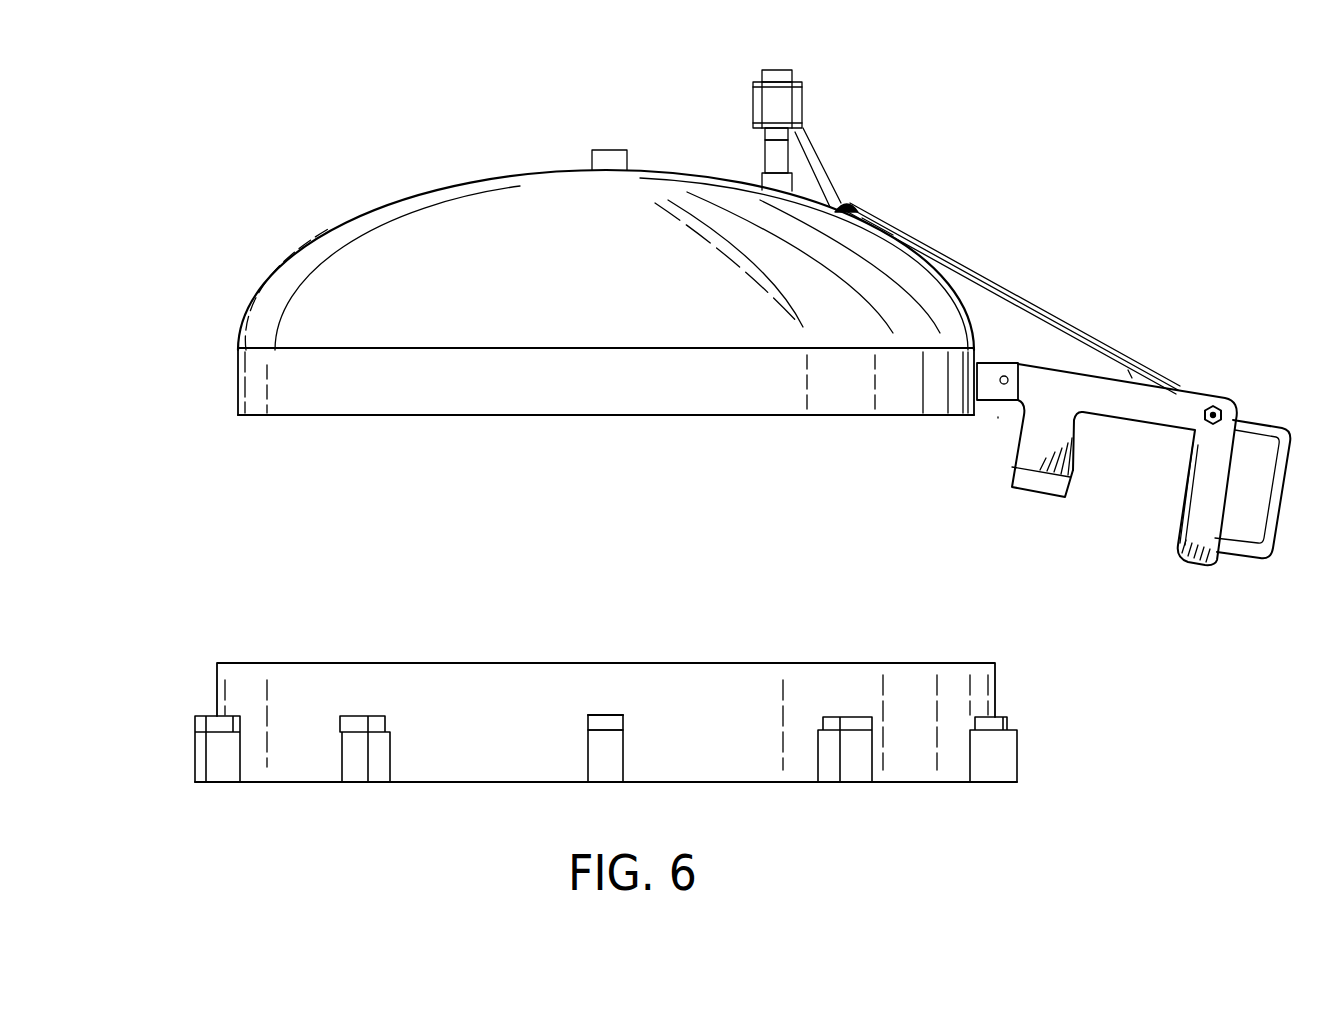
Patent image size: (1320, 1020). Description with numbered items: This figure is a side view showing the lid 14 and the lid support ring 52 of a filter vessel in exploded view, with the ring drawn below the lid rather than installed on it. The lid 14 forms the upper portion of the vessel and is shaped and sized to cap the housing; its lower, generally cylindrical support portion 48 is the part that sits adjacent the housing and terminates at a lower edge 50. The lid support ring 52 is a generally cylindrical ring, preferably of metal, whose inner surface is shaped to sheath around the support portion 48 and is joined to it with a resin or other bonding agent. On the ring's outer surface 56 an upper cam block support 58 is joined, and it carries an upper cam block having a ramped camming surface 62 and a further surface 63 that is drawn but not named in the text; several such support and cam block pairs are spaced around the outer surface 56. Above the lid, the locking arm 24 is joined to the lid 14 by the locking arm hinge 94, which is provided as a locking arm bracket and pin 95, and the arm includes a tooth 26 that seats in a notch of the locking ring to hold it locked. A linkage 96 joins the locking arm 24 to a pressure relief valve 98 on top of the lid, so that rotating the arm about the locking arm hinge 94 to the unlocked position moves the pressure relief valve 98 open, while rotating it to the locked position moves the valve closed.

The lid 14 is at (300, 186).
The locking arm 24 is at (1192, 398).
The tooth 26 is at (1043, 483).
The support portion 48 is at (238, 390).
The lower edge 50 is at (262, 417).
The lid support ring 52 is at (257, 643).
The outer surface 56 is at (425, 685).
The upper cam block support 58 is at (623, 760).
The ramped camming surface 62 is at (623, 720).
The post top surface 63 is at (603, 715).
The locking arm hinge 94 is at (998, 417).
The locking arm bracket and pin 95 is at (992, 388).
The linkage 96 is at (983, 280).
The pressure relief valve 98 is at (803, 97).